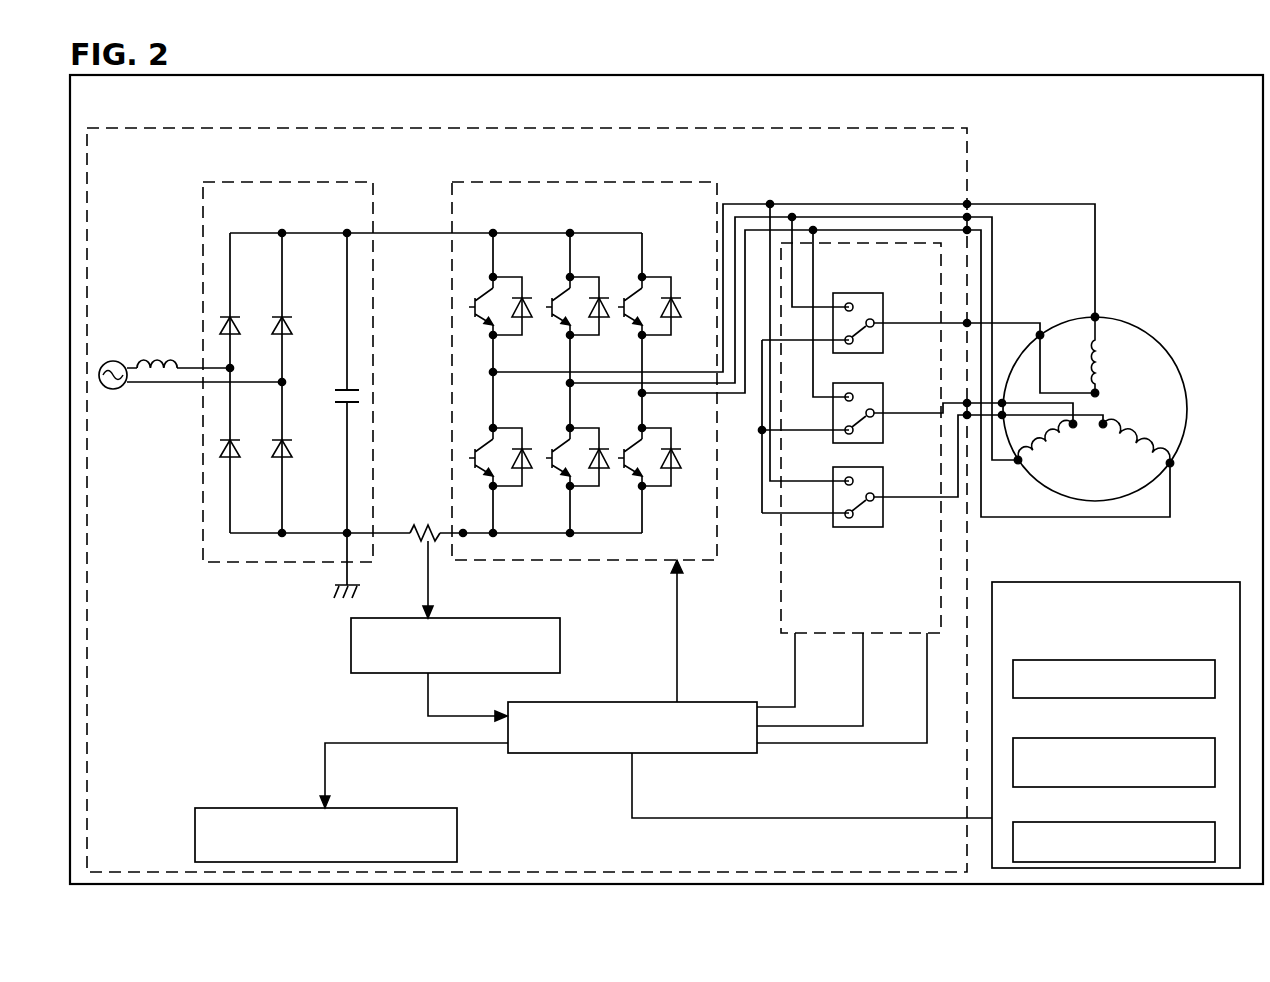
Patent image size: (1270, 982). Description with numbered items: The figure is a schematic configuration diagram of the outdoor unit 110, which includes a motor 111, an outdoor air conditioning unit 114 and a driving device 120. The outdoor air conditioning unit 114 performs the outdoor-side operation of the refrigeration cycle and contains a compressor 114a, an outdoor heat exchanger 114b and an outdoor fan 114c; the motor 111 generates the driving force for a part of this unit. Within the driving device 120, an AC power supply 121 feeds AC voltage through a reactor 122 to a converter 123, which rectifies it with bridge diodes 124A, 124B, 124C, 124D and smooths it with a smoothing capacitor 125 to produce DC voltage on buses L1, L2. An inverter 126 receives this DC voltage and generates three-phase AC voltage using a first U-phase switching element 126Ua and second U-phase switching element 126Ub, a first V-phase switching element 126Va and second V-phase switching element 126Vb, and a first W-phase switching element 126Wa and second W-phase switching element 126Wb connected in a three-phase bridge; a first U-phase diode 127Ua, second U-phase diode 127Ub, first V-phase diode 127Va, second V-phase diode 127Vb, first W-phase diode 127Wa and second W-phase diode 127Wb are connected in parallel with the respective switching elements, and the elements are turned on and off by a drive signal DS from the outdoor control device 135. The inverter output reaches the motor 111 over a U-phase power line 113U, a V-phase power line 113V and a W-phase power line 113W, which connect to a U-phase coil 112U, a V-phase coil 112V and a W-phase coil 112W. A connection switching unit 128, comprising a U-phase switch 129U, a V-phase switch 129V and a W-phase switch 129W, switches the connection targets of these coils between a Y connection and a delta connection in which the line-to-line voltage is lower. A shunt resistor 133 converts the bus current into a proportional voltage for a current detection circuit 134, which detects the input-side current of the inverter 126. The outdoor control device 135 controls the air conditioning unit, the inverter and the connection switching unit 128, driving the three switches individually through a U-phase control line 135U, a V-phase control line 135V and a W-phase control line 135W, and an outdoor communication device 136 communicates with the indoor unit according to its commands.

The outdoor unit 110 is at (668, 75).
The motor 111 is at (1122, 320).
The U-phase coil 112U is at (1080, 344).
The V-phase coil 112V is at (1061, 449).
The W-phase coil 112W is at (1143, 419).
The U-phase power line 113U is at (1025, 204).
The V-phase power line 113V is at (993, 251).
The W-phase power line 113W is at (1099, 518).
The outdoor air conditioning unit 114 is at (1028, 582).
The compressor 114a is at (1116, 660).
The outdoor heat exchanger 114b is at (1116, 738).
The outdoor fan 114c is at (1116, 822).
The driving device 120 is at (843, 128).
The power supply 121 is at (116, 389).
The reactor 122 is at (156, 358).
The converter 123 is at (297, 182).
The bridge diode 124A is at (222, 317).
The bridge diode 124B is at (222, 455).
The bridge diode 124C is at (288, 316).
The bridge diode 124D is at (289, 456).
The smoothing capacitor 125 is at (360, 390).
The inverter 126 is at (589, 182).
The first U-phase switching element 126Ua is at (474, 307).
The second U-phase switching element 126Ub is at (474, 458).
The first V-phase switching element 126Va is at (568, 289).
The second V-phase switching element 126Vb is at (568, 473).
The first W-phase switching element 126Wa is at (640, 289).
The second W-phase switching element 126Wb is at (640, 473).
The first U-phase diode 127Ua is at (528, 319).
The second U-phase diode 127Ub is at (530, 450).
The first V-phase diode 127Va is at (600, 319).
The second V-phase diode 127Vb is at (605, 450).
The first W-phase diode 127Wa is at (672, 319).
The second W-phase diode 127Wb is at (678, 472).
The connection switching unit 128 is at (779, 618).
The U-phase switch 129U is at (871, 295).
The V-phase switch 129V is at (858, 383).
The W-phase switch 129W is at (859, 527).
The shunt resistor 133 is at (427, 521).
The current detection circuit 134 is at (532, 618).
The outdoor control device 135 is at (666, 755).
The U-phase control line 135U is at (794, 668).
The V-phase control line 135V is at (828, 705).
The W-phase control line 135W is at (892, 725).
The outdoor communication device 136 is at (458, 828).
The bus L1 is at (391, 233).
The bus L2 is at (404, 536).
The drive signal DS is at (661, 631).